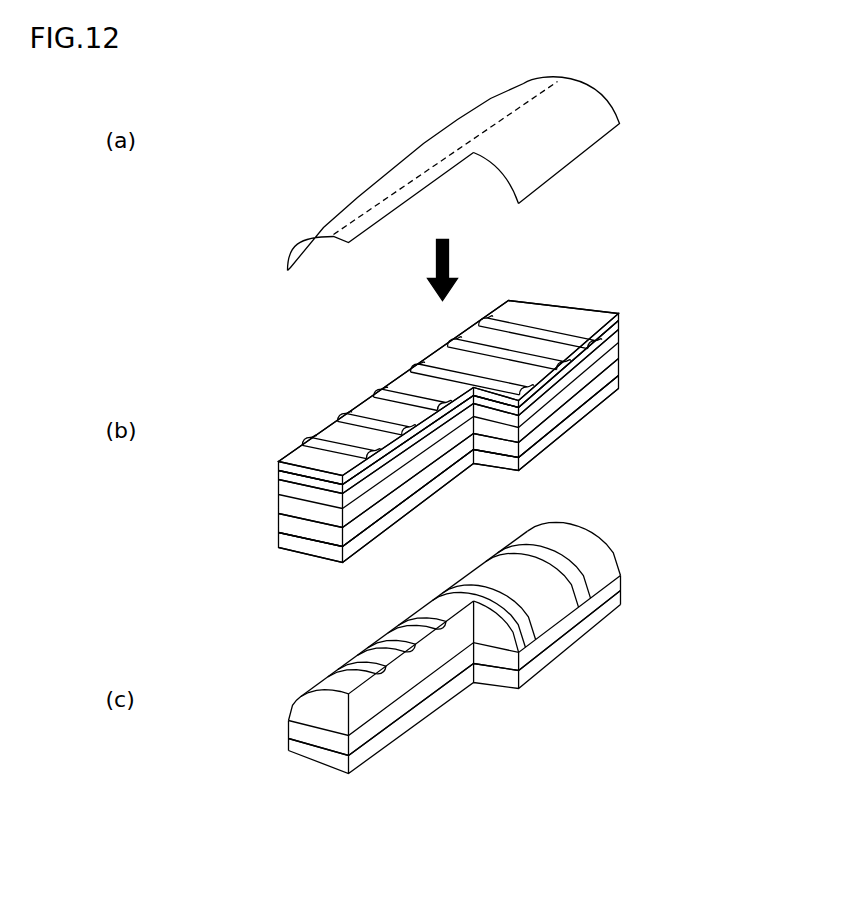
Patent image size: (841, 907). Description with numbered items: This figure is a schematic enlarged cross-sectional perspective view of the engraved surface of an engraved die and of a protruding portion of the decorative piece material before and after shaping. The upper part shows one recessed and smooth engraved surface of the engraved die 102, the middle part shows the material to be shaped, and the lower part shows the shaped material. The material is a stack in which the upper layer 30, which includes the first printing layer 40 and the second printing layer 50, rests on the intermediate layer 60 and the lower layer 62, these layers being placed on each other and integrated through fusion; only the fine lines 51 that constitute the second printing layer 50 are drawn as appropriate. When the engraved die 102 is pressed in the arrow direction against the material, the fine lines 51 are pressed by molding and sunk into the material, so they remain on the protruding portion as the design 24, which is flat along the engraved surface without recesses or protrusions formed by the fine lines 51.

The engraved die 102 is at (587, 97).
The fine lines 51 is at (537, 327).
The second printing layer 50 is at (597, 318).
The first printing layer 40 is at (613, 327).
The intermediate layer 60 is at (612, 368).
The lower layer 62 is at (603, 395).
The upper layer 30 is at (270, 461).
The design 24 is at (573, 572).